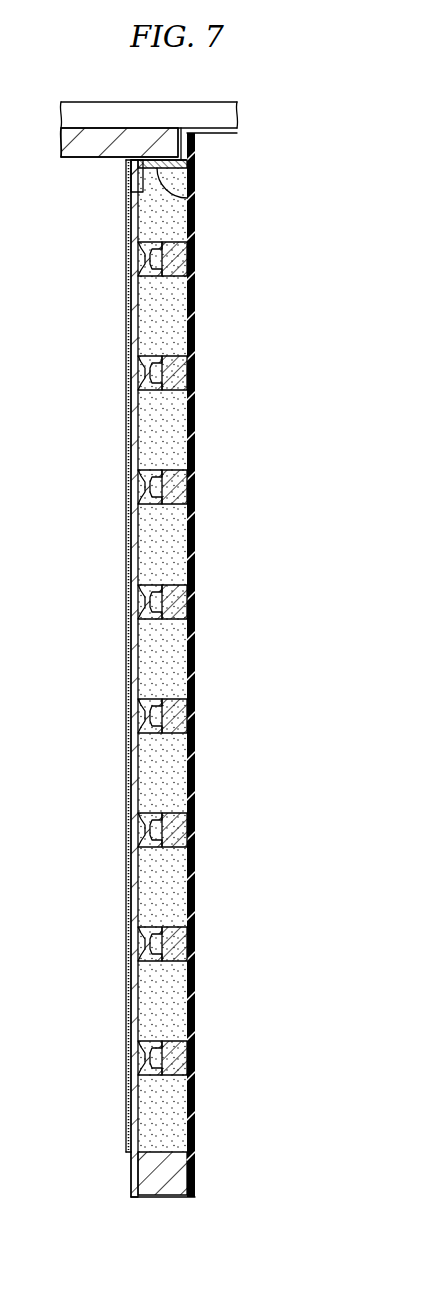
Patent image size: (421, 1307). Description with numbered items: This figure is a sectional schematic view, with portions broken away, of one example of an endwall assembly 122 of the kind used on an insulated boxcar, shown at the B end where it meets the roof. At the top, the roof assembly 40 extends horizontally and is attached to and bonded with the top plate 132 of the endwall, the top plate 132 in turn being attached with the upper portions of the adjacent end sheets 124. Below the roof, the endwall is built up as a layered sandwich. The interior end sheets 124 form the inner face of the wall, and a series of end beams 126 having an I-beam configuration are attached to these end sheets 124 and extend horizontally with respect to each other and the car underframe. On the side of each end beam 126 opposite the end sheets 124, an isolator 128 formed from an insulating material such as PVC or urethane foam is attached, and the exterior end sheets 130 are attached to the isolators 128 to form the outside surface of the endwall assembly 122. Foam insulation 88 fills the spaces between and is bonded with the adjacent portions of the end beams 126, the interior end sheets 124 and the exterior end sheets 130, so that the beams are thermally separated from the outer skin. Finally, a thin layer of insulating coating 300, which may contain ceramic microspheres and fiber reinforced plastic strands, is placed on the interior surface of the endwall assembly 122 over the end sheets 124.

The roof assembly 40 is at (94, 96).
The foam insulation 88 is at (176, 776).
The endwall assembly 122 is at (170, 1212).
The end sheets 124 is at (132, 1180).
The end beams 126 is at (142, 352).
The isolators 128 is at (193, 232).
The end sheets 130 is at (195, 347).
The top plate 132 is at (194, 203).
The insulating coating 300 is at (127, 560).